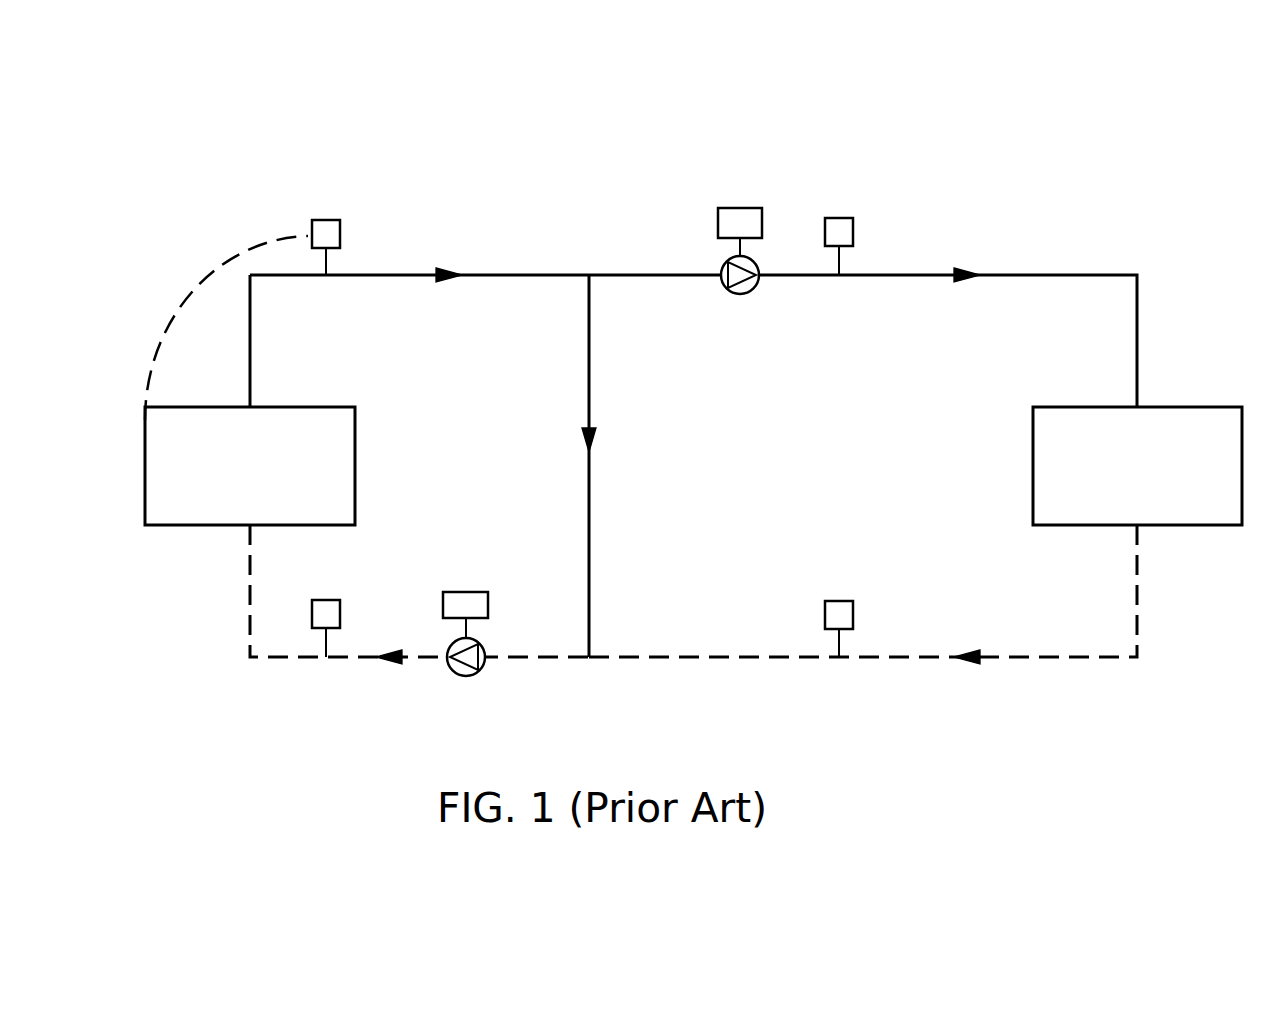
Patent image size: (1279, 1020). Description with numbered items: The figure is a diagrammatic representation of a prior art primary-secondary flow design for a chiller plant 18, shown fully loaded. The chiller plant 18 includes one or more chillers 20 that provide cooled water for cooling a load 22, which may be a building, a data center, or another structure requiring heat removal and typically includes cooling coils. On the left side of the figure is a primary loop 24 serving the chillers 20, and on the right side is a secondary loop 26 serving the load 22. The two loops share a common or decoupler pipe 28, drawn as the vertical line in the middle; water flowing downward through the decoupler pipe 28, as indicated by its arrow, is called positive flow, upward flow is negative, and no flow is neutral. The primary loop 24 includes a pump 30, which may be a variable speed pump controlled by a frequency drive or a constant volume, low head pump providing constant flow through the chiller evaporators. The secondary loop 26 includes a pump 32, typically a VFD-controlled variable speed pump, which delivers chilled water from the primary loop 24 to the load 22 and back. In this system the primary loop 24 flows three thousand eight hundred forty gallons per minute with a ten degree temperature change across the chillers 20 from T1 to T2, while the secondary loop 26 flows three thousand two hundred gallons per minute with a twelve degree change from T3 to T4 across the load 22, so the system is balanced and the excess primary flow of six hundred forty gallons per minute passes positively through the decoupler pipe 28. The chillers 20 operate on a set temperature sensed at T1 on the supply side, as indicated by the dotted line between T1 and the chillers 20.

The chiller plant 18 is at (620, 180).
The chillers 20 is at (145, 497).
The load 22 is at (1220, 525).
The primary loop 24 is at (257, 658).
The secondary loop 26 is at (1140, 610).
The decoupler pipe 28 is at (589, 405).
The pump 30 is at (483, 650).
The pump 32 is at (752, 292).
The temperature sensor T1 is at (312, 232).
The temperature sensor T2 is at (312, 614).
The temperature sensor T3 is at (855, 232).
The temperature sensor T4 is at (826, 630).